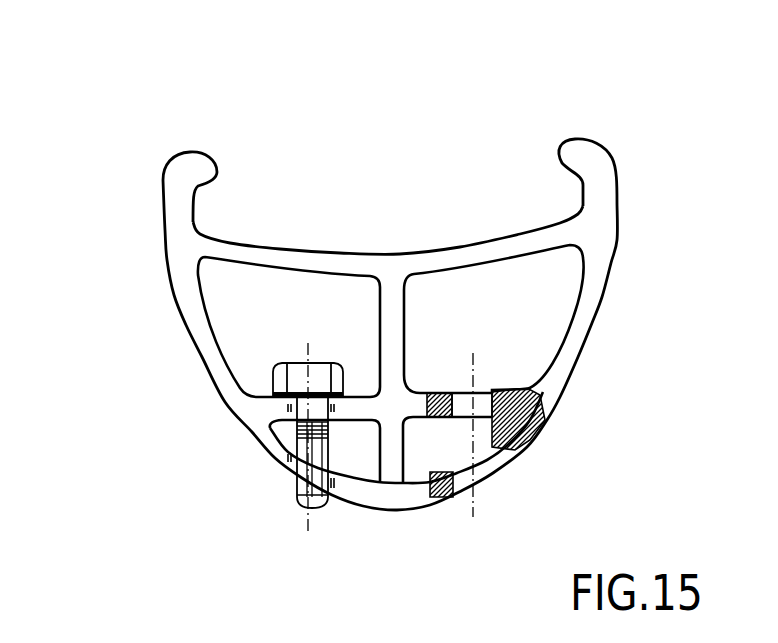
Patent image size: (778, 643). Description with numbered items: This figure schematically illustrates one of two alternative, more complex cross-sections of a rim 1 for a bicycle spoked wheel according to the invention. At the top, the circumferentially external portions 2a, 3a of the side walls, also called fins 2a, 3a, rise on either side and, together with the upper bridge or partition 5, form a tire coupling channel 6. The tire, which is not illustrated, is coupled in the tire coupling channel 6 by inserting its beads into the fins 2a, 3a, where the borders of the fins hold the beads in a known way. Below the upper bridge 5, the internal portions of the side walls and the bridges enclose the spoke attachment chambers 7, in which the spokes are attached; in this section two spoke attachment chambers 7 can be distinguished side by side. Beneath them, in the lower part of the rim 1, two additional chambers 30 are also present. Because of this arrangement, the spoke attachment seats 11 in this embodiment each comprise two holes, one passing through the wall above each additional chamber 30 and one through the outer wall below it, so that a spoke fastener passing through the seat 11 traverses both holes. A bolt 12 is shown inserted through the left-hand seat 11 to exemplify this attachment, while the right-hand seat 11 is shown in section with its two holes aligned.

The rim 1 is at (110, 182).
The circumferentially external portion of the side wall 2a is at (197, 162).
The circumferentially external portion of the side wall 3a is at (592, 145).
The upper bridge 5 is at (485, 253).
The tire coupling channel 6 is at (388, 157).
The spoke attachment chamber 7 is at (283, 300).
The spoke attachment seat 11 is at (480, 393).
The bolt 12 is at (293, 517).
The additional chamber 30 is at (483, 428).